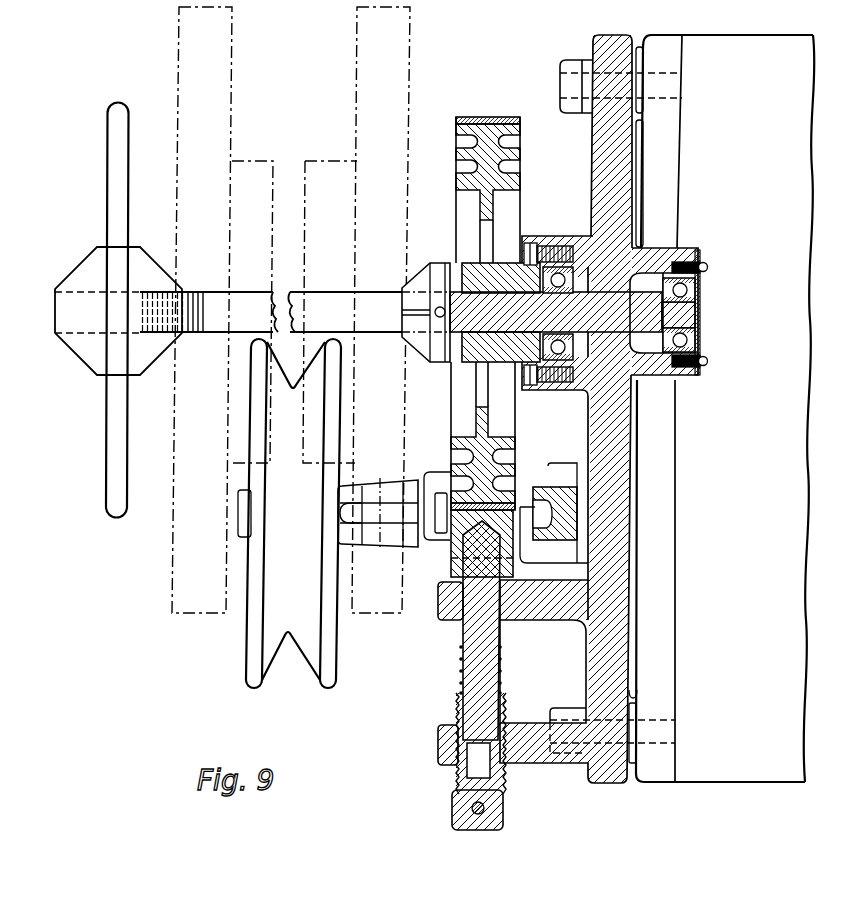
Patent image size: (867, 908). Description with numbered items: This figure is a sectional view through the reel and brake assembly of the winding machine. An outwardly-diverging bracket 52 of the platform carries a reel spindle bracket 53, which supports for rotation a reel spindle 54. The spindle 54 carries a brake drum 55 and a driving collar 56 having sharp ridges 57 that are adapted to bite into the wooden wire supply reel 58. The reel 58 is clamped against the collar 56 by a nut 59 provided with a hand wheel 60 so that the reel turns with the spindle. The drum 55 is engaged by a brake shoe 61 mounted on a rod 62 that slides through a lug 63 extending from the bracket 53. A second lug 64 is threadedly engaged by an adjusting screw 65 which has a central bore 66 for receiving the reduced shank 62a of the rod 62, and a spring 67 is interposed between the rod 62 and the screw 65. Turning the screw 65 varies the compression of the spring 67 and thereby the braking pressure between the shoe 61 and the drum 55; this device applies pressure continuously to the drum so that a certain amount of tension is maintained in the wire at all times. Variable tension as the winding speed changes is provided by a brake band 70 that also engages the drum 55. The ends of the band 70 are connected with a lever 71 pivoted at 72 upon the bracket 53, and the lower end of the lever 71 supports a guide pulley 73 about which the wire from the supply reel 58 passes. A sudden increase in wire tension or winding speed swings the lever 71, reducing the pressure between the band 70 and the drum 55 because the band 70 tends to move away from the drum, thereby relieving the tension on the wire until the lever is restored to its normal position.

The bracket 52 is at (673, 27).
The reel spindle bracket 53 is at (593, 45).
The reel spindle 54 is at (597, 297).
The brake drum 55 is at (470, 299).
The driving collar 56 is at (438, 265).
The sharp ridges 57 is at (418, 272).
The wire supply reel 58 is at (179, 43).
The nut 59 is at (98, 247).
The hand wheel 60 is at (106, 468).
The brake shoe 61 is at (450, 558).
The rod 62 is at (462, 635).
The reduced shank 62a is at (503, 703).
The lug 63 is at (438, 603).
The lug 64 is at (438, 750).
The adjusting screw 65 is at (453, 708).
The central bore 66 is at (490, 765).
The spring 67 is at (497, 655).
The brake band 70 is at (493, 117).
The lever 71 is at (386, 482).
The pivot 72 is at (530, 562).
The guide pulley 73 is at (253, 686).